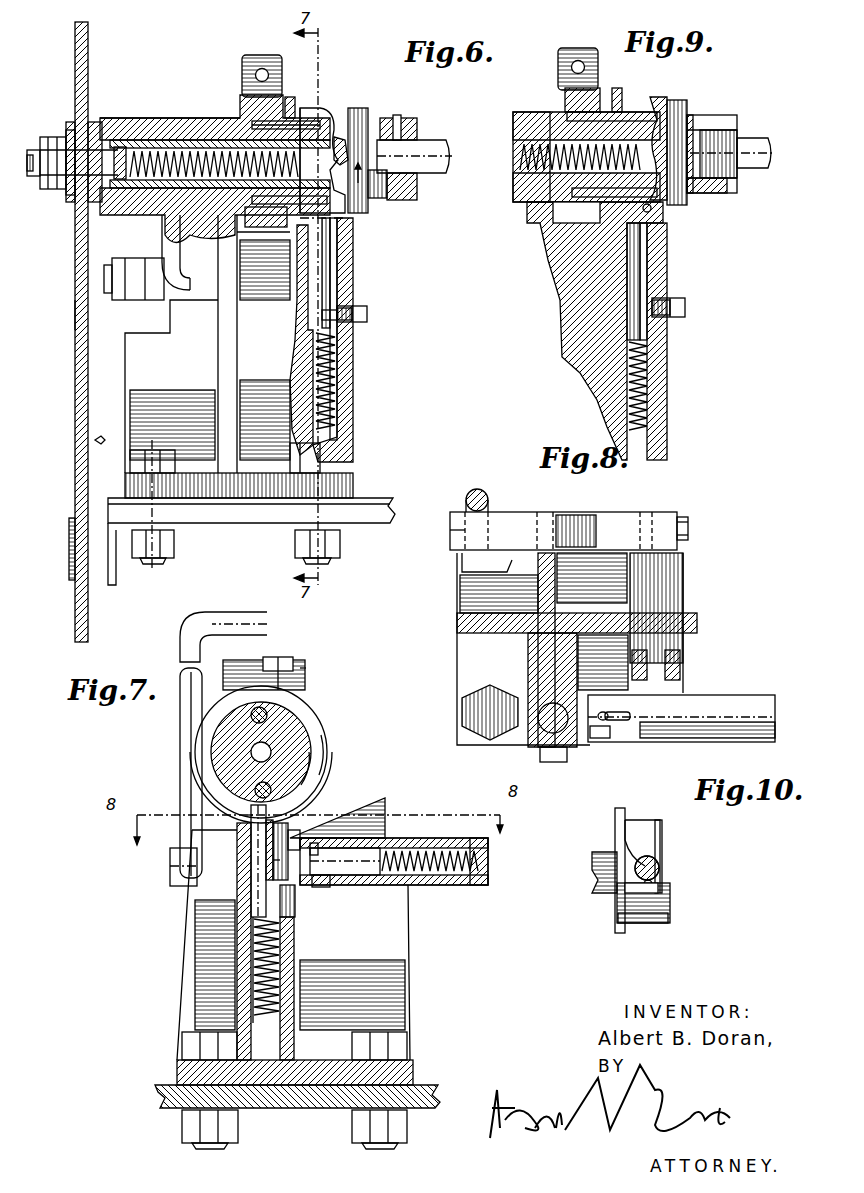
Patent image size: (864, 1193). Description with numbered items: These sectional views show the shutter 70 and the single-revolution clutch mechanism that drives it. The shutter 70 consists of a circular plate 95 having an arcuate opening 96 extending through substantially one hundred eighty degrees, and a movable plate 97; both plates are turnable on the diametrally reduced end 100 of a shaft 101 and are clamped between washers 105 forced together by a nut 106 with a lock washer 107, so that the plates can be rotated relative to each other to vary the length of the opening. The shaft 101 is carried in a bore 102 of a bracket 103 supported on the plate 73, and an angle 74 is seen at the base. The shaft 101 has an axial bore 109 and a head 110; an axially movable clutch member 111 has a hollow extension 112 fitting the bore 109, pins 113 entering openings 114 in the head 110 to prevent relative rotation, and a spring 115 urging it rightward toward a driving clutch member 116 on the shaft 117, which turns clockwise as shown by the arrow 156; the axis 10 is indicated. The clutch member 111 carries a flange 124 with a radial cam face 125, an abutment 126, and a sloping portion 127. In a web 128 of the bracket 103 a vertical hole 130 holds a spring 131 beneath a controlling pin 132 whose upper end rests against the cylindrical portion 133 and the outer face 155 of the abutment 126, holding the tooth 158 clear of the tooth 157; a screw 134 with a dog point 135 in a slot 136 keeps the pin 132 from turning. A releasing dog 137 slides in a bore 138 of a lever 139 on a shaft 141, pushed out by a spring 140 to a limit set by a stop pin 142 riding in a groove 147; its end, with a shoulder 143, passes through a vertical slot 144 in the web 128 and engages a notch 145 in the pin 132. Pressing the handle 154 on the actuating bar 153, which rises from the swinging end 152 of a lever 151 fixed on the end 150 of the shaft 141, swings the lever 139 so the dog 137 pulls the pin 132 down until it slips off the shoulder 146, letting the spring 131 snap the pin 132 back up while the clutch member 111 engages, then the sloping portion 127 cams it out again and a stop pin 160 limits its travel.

In FIG. 6, the axis 10 is at (258, 218).
In FIG. 6, the shutter 70 is at (72, 314).
In FIG. 6, the plate 73 is at (365, 498).
In FIG. 7, the plate 73 is at (220, 554).
In FIG. 6, the angle bracket 74 is at (118, 565).
In FIG. 6, the circular plate 95 is at (76, 485).
In FIG. 6, the arcuate opening 96 is at (72, 545).
In FIG. 6, the movable plate 97 is at (95, 440).
In FIG. 6, the diametrally reduced end 100 is at (90, 200).
In FIG. 6, the shaft 101 is at (120, 140).
In FIG. 6, the bore 102 is at (165, 118).
In FIG. 6, the bracket 103 is at (150, 374).
In FIG. 8, the bracket 103 is at (465, 622).
In FIG. 7, the bracket 103 is at (390, 980).
In FIG. 6, the washers 105 is at (72, 128).
In FIG. 6, the nut 106 is at (52, 138).
In FIG. 6, the lock washer 107 is at (48, 192).
In FIG. 6, the axial bore 109 is at (150, 118).
In FIG. 6, the head 110 is at (258, 62).
In FIG. 9, the head 110 is at (570, 90).
In FIG. 6, the clutch member 111 is at (324, 118).
In FIG. 9, the clutch member 111 is at (655, 110).
In FIG. 10, the clutch member 111 is at (660, 832).
In FIG. 6, the hollow extension 112 is at (222, 148).
In FIG. 6, the pins 113 is at (280, 110).
In FIG. 9, the pins 113 is at (617, 90).
In FIG. 7, the pins 113 is at (262, 712).
In FIG. 6, the openings 114 is at (270, 122).
In FIG. 9, the openings 114 is at (570, 116).
In FIG. 6, the spring 115 is at (150, 200).
In FIG. 9, the spring 115 is at (520, 160).
In FIG. 6, the driving clutch member 116 is at (358, 118).
In FIG. 9, the driving clutch member 116 is at (678, 104).
In FIG. 6, the shaft 117 is at (425, 150).
In FIG. 9, the shaft 117 is at (752, 162).
In FIG. 10, the flange 124 is at (615, 808).
In FIG. 7, the radial cam face 125 is at (196, 752).
In FIG. 10, the radial cam face 125 is at (630, 818).
In FIG. 10, the abutment 126 is at (612, 892).
In FIG. 7, the sloping portion 127 is at (310, 752).
In FIG. 10, the sloping portion 127 is at (650, 858).
In FIG. 6, the web 128 is at (350, 390).
In FIG. 9, the web 128 is at (660, 410).
In FIG. 8, the web 128 is at (530, 665).
In FIG. 7, the web 128 is at (240, 968).
In FIG. 6, the vertical hole 130 is at (337, 277).
In FIG. 9, the vertical hole 130 is at (648, 278).
In FIG. 7, the vertical hole 130 is at (252, 993).
In FIG. 6, the spring 131 is at (338, 370).
In FIG. 9, the spring 131 is at (648, 382).
In FIG. 7, the spring 131 is at (268, 973).
In FIG. 6, the controlling pin 132 is at (330, 260).
In FIG. 9, the controlling pin 132 is at (633, 262).
In FIG. 8, the controlling pin 132 is at (548, 730).
In FIG. 7, the controlling pin 132 is at (248, 835).
In FIG. 10, the controlling pin 132 is at (660, 866).
In FIG. 7, the cylindrical portion 133 is at (318, 742).
In FIG. 10, the cylindrical portion 133 is at (635, 922).
In FIG. 6, the screw 134 is at (360, 322).
In FIG. 9, the screw 134 is at (668, 318).
In FIG. 7, the screw 134 is at (153, 334).
In FIG. 6, the dog point 135 is at (322, 314).
In FIG. 6, the slot 136 is at (305, 300).
In FIG. 8, the releasing dog 137 is at (598, 732).
In FIG. 7, the releasing dog 137 is at (300, 838).
In FIG. 7, the bore 138 is at (432, 848).
In FIG. 8, the lever 139 is at (715, 700).
In FIG. 7, the lever 139 is at (400, 885).
In FIG. 7, the spring 140 is at (480, 884).
In FIG. 8, the shaft 141 is at (685, 580).
In FIG. 7, the shaft 141 is at (385, 852).
In FIG. 8, the stop pin 142 is at (603, 712).
In FIG. 7, the stop pin 142 is at (318, 850).
In FIG. 8, the shoulder 143 is at (560, 762).
In FIG. 7, the shoulder 143 is at (283, 822).
In FIG. 7, the vertical slot 144 is at (290, 900).
In FIG. 7, the notch 145 is at (253, 823).
In FIG. 7, the shoulder 146 is at (270, 860).
In FIG. 8, the groove 147 is at (625, 722).
In FIG. 7, the groove 147 is at (324, 886).
In FIG. 8, the end 150 is at (665, 505).
In FIG. 6, the lever 151 is at (137, 300).
In FIG. 8, the lever 151 is at (600, 520).
In FIG. 7, the lever 151 is at (172, 868).
In FIG. 8, the swinging end 152 is at (498, 522).
In FIG. 6, the actuating bar 153 is at (180, 278).
In FIG. 8, the actuating bar 153 is at (478, 490).
In FIG. 7, the actuating bar 153 is at (185, 730).
In FIG. 7, the handle 154 is at (232, 625).
In FIG. 7, the outer face 155 is at (200, 790).
In FIG. 10, the outer face 155 is at (655, 880).
In FIG. 6, the arrow 156 is at (380, 200).
In FIG. 6, the tooth 157 is at (400, 120).
In FIG. 9, the tooth 157 is at (668, 168).
In FIG. 6, the tooth 158 is at (340, 150).
In FIG. 9, the tooth 158 is at (690, 150).
In FIG. 10, the tooth 158 is at (668, 920).
In FIG. 9, the stop pin 160 is at (650, 209).
In FIG. 10, the stop pin 160 is at (652, 886).